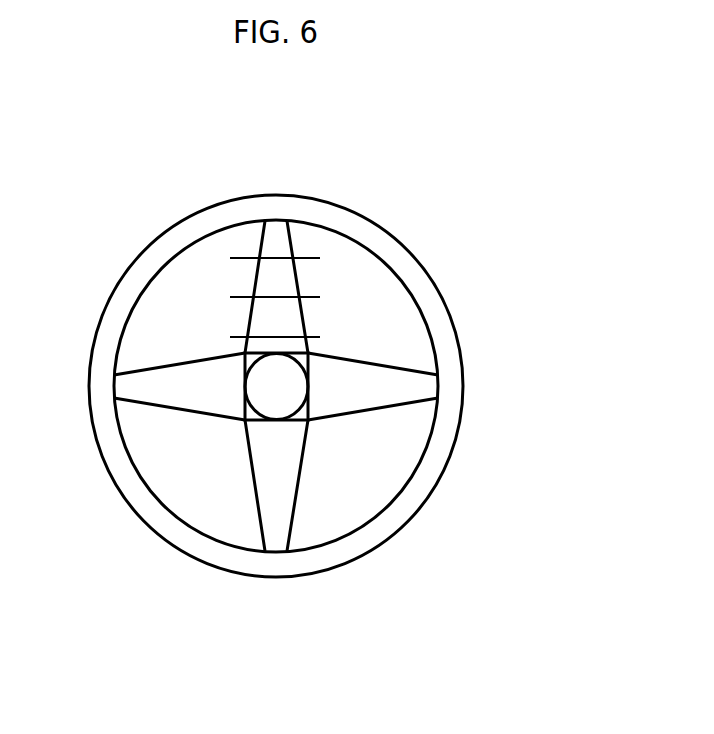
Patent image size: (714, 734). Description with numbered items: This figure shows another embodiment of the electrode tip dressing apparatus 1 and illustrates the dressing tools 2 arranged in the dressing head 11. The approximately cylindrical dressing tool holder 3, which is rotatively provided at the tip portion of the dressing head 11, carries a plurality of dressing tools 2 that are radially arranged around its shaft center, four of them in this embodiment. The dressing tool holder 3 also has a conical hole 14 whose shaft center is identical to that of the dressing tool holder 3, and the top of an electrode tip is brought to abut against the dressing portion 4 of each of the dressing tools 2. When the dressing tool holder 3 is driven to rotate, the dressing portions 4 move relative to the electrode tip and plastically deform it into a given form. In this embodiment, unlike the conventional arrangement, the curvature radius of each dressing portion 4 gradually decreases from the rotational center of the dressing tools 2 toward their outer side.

The electrode tip dressing apparatus 1 is at (302, 371).
The dressing head 11 is at (298, 376).
The dressing tools 2 is at (288, 238).
The dressing tool holder 3 is at (425, 273).
The dressing portion 4 is at (267, 240).
The conical hole 14 is at (378, 502).